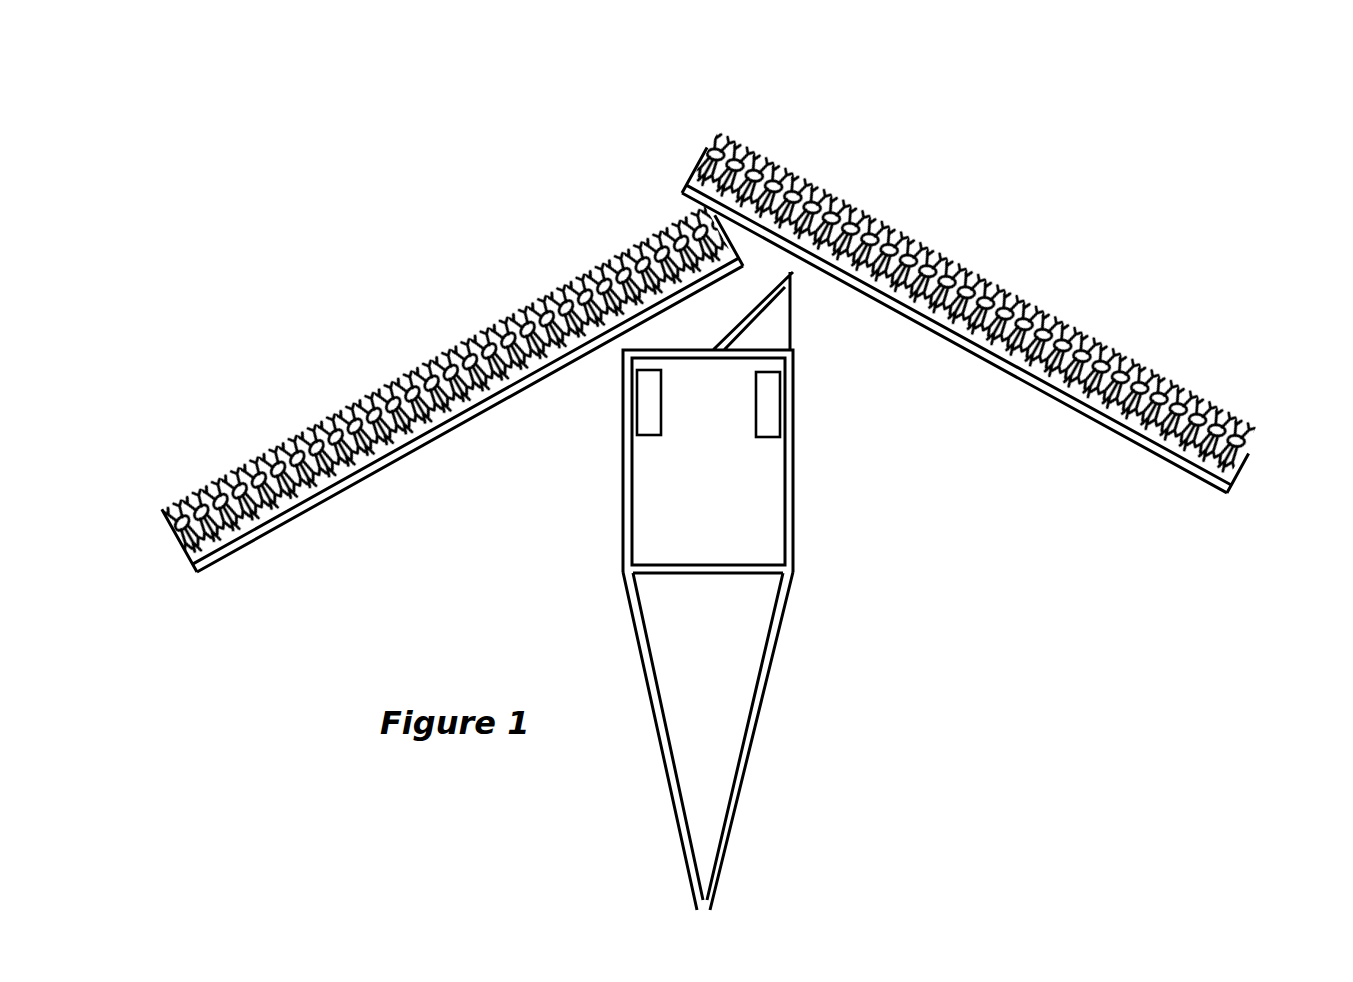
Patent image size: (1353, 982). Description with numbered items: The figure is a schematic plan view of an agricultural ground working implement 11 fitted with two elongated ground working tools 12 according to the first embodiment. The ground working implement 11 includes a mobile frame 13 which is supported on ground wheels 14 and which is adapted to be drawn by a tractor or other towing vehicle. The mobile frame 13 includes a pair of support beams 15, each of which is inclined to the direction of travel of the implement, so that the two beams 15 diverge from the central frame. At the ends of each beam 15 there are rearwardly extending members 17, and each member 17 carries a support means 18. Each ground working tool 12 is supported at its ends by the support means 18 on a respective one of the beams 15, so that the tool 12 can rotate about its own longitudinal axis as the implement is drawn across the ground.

The ground working implement 11 is at (473, 175).
The ground working tool 12 is at (683, 330).
The mobile frame 13 is at (748, 591).
The ground wheel 14 is at (645, 410).
The support beam 15 is at (308, 503).
The rearwardly extending member 17 is at (188, 553).
The support means 18 is at (162, 508).